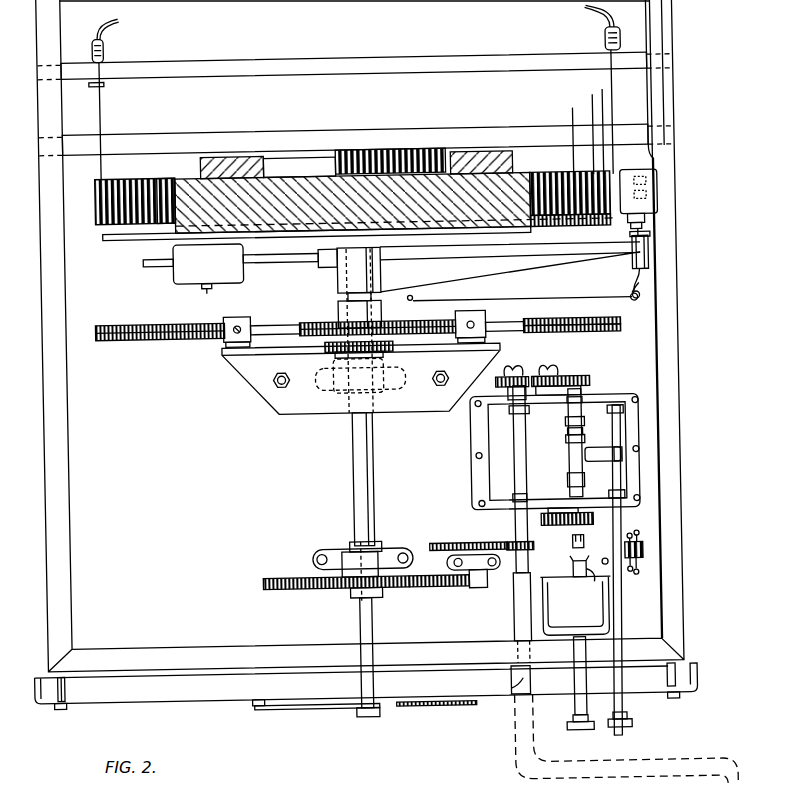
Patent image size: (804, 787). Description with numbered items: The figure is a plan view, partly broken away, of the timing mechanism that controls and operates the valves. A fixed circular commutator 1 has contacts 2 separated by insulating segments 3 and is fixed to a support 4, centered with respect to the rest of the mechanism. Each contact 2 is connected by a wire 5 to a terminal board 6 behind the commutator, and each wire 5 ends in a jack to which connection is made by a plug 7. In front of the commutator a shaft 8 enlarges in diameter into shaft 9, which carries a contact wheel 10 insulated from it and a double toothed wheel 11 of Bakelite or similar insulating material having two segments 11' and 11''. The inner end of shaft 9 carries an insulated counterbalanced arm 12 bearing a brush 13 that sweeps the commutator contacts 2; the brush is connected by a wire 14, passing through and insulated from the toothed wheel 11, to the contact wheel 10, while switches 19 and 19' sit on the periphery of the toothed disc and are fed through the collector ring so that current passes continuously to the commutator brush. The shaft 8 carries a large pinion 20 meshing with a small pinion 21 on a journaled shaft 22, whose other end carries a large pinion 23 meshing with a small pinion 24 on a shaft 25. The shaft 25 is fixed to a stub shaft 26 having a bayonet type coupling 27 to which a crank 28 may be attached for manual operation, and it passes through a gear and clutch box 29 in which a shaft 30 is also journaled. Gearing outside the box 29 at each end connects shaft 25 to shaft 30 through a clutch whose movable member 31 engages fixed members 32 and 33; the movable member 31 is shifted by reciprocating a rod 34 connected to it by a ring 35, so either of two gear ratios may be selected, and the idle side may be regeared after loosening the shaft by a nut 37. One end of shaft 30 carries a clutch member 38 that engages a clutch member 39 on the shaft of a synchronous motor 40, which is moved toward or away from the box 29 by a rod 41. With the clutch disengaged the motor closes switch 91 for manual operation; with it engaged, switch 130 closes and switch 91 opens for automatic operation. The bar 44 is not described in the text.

The commutator 1 is at (273, 190).
The contacts 2 is at (150, 183).
The insulating segments 3 is at (170, 183).
The support 4 is at (398, 141).
The wire 5 is at (103, 126).
The terminal board 6 is at (208, 66).
The plug 7 is at (104, 50).
The shaft 8 is at (358, 614).
The shaft 9 is at (355, 466).
The contact wheel 10 is at (340, 345).
The double toothed wheel 11 is at (275, 342).
The segment 11' is at (571, 311).
The segment 11'' is at (572, 341).
The counterbalanced arm 12 is at (648, 251).
The brush 13 is at (650, 190).
The wire 14 is at (602, 305).
The switch 19 is at (484, 323).
The switch 19' is at (239, 321).
The large pinion 20 is at (280, 589).
The small pinion 21 is at (487, 588).
The journaled shaft 22 is at (472, 588).
The large pinion 23 is at (445, 548).
The small pinion 24 is at (510, 549).
The shaft 25 is at (525, 563).
The stub shaft 26 is at (513, 629).
The bayonet type coupling 27 is at (510, 691).
The crank 28 is at (514, 741).
The gear and clutch box 29 is at (486, 444).
The shaft 30 is at (568, 434).
The movable member 31 is at (580, 439).
The fixed member 32 is at (579, 424).
The fixed member 33 is at (580, 489).
The rod 34 is at (622, 522).
The ring 35 is at (565, 457).
The nut 37 is at (549, 414).
The clutch member 38 is at (579, 551).
The clutch member 39 is at (587, 581).
The synchronous motor 40 is at (595, 619).
The rod 41 is at (573, 711).
The bar 44 is at (282, 330).
The switch 91 is at (640, 536).
The switch 130 is at (646, 569).